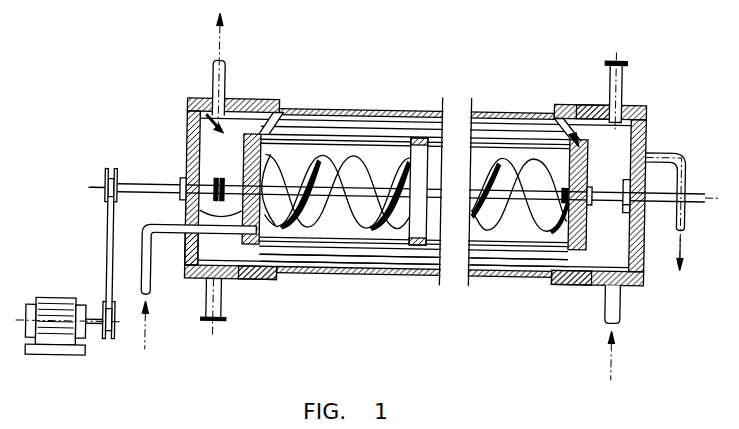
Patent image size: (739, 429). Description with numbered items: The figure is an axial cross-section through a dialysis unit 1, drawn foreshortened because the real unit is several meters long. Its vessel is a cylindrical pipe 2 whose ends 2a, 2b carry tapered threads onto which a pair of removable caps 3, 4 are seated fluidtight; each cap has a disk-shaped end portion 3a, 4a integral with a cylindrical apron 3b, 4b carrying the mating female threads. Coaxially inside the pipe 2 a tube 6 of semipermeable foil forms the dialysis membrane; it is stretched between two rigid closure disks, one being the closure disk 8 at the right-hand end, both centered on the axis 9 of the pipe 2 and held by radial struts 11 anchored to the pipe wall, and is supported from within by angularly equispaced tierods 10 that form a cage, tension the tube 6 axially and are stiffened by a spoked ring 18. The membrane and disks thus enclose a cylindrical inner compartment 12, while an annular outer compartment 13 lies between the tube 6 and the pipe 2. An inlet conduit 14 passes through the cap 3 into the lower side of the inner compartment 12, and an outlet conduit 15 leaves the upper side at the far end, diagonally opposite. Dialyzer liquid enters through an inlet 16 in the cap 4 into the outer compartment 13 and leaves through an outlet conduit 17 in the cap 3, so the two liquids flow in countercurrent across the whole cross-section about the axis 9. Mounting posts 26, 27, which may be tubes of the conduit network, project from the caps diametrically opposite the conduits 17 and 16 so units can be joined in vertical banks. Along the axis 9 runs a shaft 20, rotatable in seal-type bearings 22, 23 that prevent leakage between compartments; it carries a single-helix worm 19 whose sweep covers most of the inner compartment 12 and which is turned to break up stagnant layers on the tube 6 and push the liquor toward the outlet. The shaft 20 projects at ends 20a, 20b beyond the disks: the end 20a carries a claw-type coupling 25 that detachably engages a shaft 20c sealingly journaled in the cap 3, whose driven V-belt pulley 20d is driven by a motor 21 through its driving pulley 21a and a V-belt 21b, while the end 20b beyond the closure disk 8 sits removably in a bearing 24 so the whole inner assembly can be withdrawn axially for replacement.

The dialysis unit 1 is at (514, 88).
The cylindrical pipe 2 is at (488, 110).
The pipe end 2a is at (568, 260).
The pipe end 2b is at (272, 283).
The cap 3 is at (238, 97).
The disk-shaped end portion 3a is at (180, 262).
The cylindrical apron 3b is at (257, 130).
The cap 4 is at (573, 285).
The disk-shaped end portion 4a is at (640, 218).
The cylindrical apron 4b is at (597, 103).
The tube 6 is at (380, 250).
The closure disk 8 is at (543, 232).
The axis 9 is at (663, 193).
The tierods 10 is at (345, 222).
The struts 11 is at (290, 120).
The inner compartment 12 is at (397, 152).
The outer compartment 13 is at (360, 127).
The inlet conduit 14 is at (153, 295).
The outlet conduit 15 is at (685, 210).
The inlet 16 is at (622, 310).
The outlet conduit 17 is at (211, 72).
The ring 18 is at (421, 236).
The single-helix worm 19 is at (518, 218).
The shaft 20 is at (289, 200).
The shaft end 20a is at (221, 178).
The shaft end 20b is at (596, 195).
The shaft 20c is at (107, 197).
The driven V-belt pulley 20d is at (103, 173).
The motor 21 is at (53, 363).
The driving pulley 21a is at (113, 340).
The V-belt 21b is at (108, 260).
The seal-type bearing 22 is at (183, 210).
The seal-type bearing 23 is at (588, 178).
The bearing 24 is at (624, 215).
The claw-type coupling 25 is at (182, 173).
The mounting post 26 is at (227, 308).
The mounting post 27 is at (618, 77).